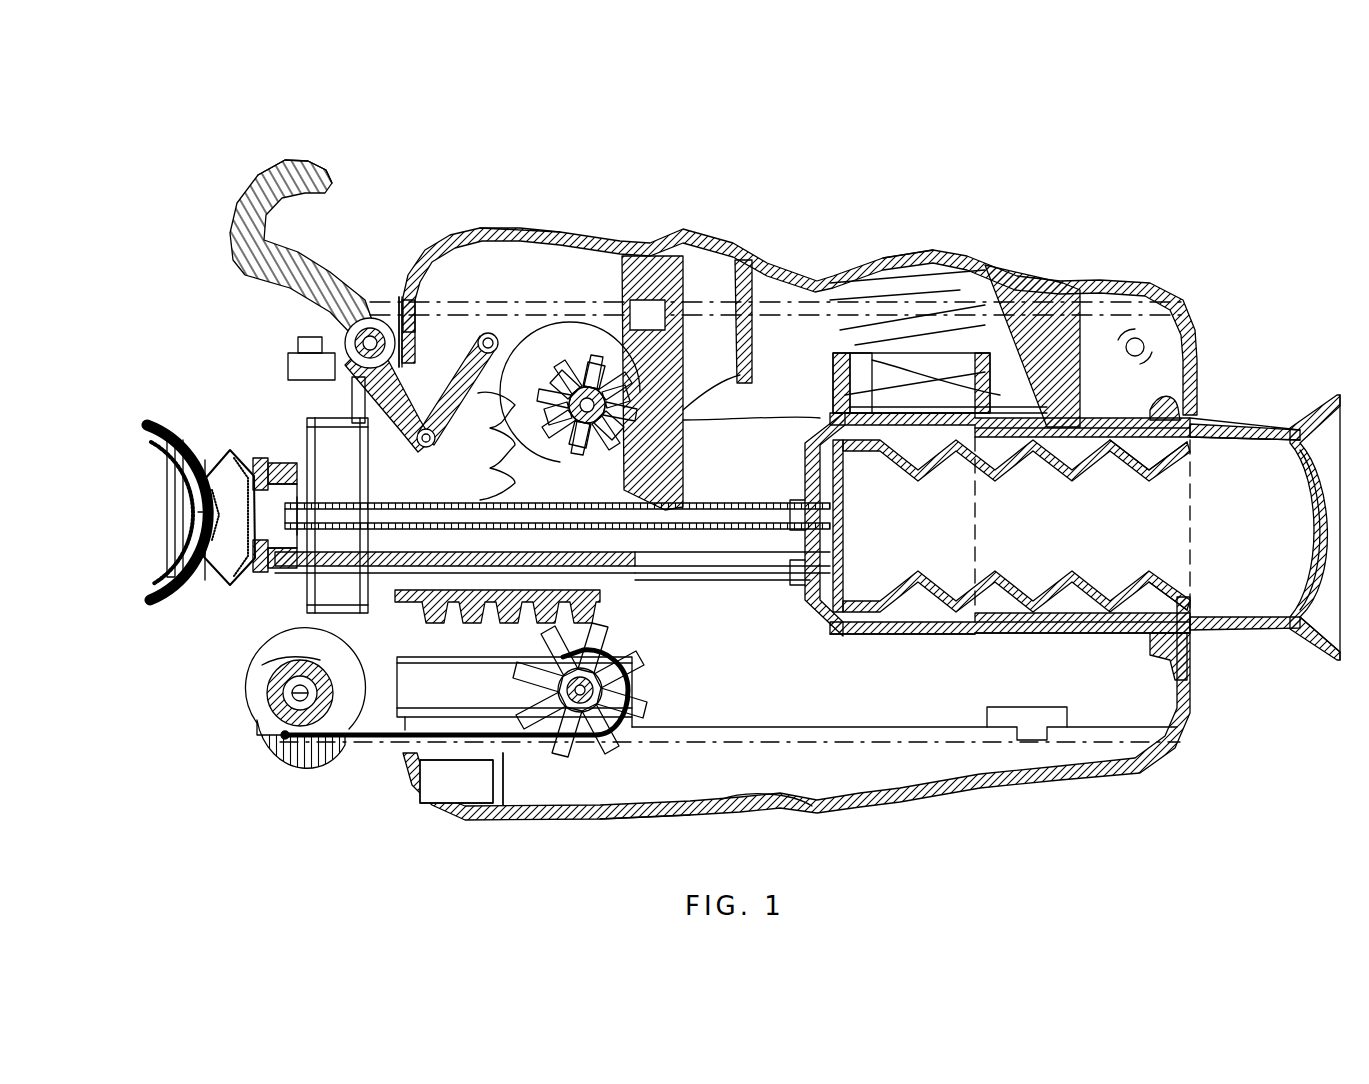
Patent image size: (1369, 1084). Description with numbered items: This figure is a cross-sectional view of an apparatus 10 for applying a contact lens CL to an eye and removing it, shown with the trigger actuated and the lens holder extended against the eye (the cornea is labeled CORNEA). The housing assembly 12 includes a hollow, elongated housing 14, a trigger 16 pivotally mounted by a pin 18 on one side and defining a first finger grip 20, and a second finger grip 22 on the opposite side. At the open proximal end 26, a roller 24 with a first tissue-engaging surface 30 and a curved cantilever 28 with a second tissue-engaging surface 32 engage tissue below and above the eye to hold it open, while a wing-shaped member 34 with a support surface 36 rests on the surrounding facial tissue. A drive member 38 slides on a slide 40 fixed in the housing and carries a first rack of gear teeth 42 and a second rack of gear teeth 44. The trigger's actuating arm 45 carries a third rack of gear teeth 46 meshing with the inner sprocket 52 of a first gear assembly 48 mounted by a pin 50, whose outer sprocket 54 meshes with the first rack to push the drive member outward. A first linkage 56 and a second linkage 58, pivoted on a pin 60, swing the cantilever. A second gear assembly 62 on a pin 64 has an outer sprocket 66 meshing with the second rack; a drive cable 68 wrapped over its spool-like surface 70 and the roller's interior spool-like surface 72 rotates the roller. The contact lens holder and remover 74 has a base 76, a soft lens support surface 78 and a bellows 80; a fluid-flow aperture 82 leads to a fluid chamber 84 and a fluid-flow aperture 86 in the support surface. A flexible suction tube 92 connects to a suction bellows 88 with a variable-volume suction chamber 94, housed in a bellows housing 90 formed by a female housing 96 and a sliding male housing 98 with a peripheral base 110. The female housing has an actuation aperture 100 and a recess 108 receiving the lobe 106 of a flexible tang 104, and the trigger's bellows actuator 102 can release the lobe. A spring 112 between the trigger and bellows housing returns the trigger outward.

The apparatus 10 is at (1135, 213).
The housing assembly 12 is at (397, 286).
The housing 14 is at (905, 710).
The trigger 16 is at (760, 252).
The pin 18 is at (1143, 340).
The first finger grip 20 is at (590, 262).
The second finger grip 22 is at (700, 815).
The roller 24 is at (350, 720).
The open proximal end 26 is at (315, 655).
The curved cantilever 28 is at (330, 175).
The first tissue-engaging surface 30 is at (290, 780).
The second tissue-engaging surface 32 is at (258, 178).
The wing-shaped member 34 is at (255, 465).
The support surface 36 is at (260, 400).
The drive member 38 is at (312, 372).
The slide 40 is at (747, 570).
The first rack of gear teeth 42 is at (418, 505).
The second rack of gear teeth 44 is at (497, 623).
The actuating arm 45 is at (751, 413).
The third rack of gear teeth 46 is at (586, 320).
The first gear assembly 48 is at (538, 342).
The pin 50 is at (578, 403).
The inner sprocket 52 is at (577, 423).
The outer sprocket 54 is at (485, 458).
The first linkage 56 is at (455, 385).
The second linkage 58 is at (341, 400).
The pin 60 is at (368, 318).
The second gear assembly 62 is at (630, 703).
The pin 64 is at (595, 712).
The outer sprocket 66 is at (555, 770).
The drive cable 68 is at (398, 760).
The spool-like surface 70 is at (495, 700).
The interior spool-like surface 72 is at (323, 676).
The contact lens holder and remover 74 is at (193, 434).
The base 76 is at (271, 540).
The lens support surface 78 is at (165, 548).
The bellows 80 is at (225, 593).
The fluid-flow aperture 82 is at (337, 515).
The fluid chamber 84 is at (232, 517).
The fluid-flow aperture 86 is at (230, 593).
The suction bellows 88 is at (1218, 450).
The bellows housing 90 is at (895, 634).
The flexible suction tube 92 is at (793, 532).
The variable-volume suction chamber 94 is at (1062, 536).
The female housing 96 is at (1062, 634).
The male housing 98 is at (1295, 445).
The actuation aperture 100 is at (940, 383).
The bellows actuator 102 is at (1092, 265).
The flexible tang 104 is at (1148, 470).
The lobe 106 is at (1208, 452).
The recess 108 is at (1178, 445).
The peripheral base 110 is at (1325, 665).
The spring 112 is at (925, 250).
The cornea CORNEA is at (165, 455).
The contact lens CL is at (175, 525).